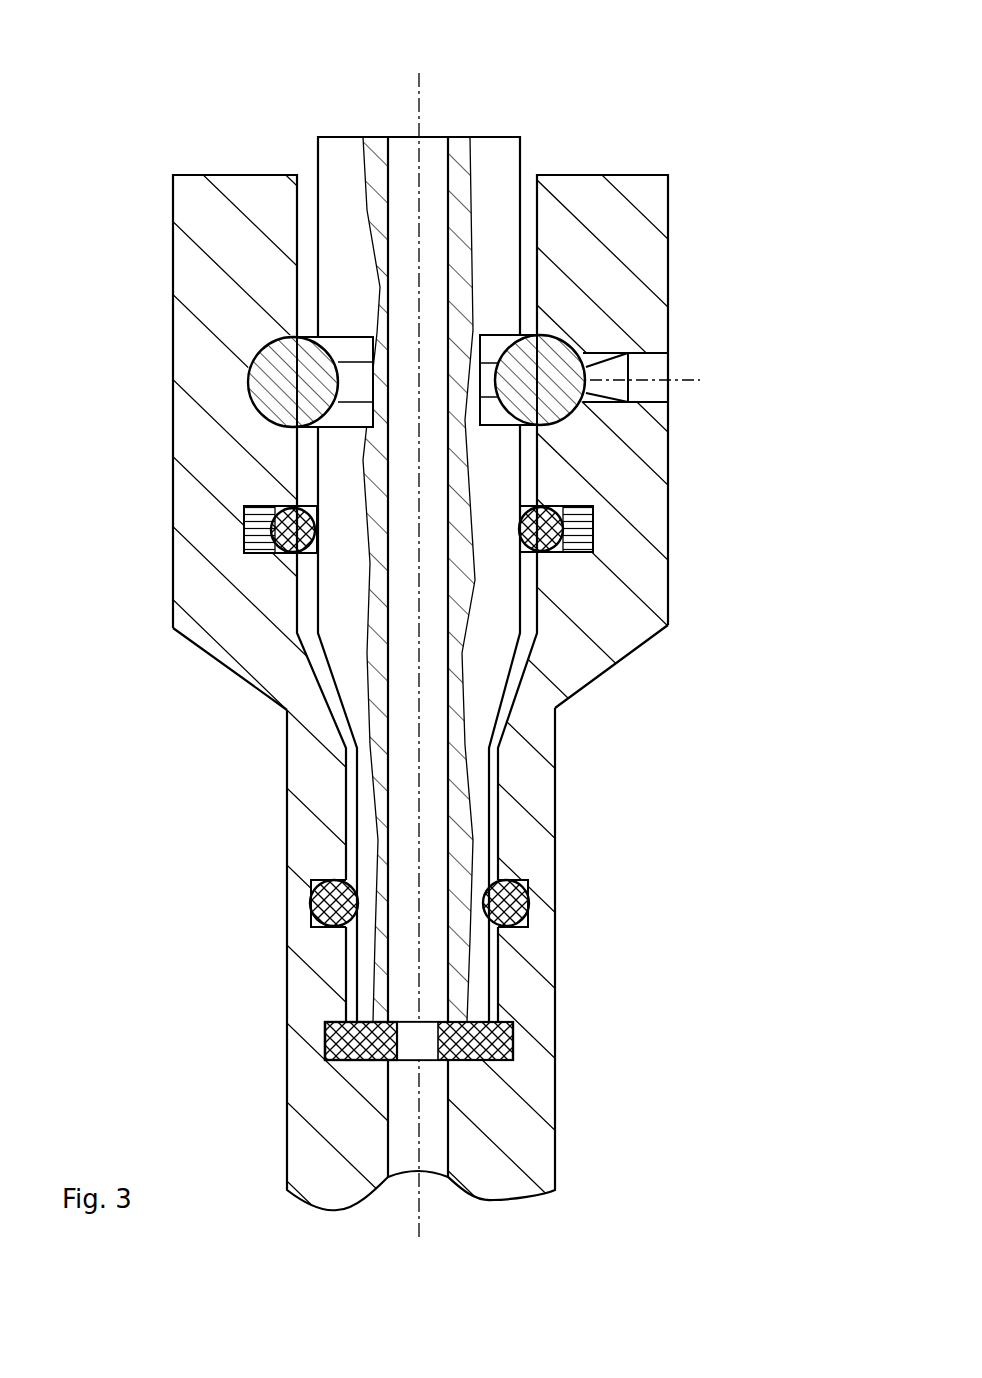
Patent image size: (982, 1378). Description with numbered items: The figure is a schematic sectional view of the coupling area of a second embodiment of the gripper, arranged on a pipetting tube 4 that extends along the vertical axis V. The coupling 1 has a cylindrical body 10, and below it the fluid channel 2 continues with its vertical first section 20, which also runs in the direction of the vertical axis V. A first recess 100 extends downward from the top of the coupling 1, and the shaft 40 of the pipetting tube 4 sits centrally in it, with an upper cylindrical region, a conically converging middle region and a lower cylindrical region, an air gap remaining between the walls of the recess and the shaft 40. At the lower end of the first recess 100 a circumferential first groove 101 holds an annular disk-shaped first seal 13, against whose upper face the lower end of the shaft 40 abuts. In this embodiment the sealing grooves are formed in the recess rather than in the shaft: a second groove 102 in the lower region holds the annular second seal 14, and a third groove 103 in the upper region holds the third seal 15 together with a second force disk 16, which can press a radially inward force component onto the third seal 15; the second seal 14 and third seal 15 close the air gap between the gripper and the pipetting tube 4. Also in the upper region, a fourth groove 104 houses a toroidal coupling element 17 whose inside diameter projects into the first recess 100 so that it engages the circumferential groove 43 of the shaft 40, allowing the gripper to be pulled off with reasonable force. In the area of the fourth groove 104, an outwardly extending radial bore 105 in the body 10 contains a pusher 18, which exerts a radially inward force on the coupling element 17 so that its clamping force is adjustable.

The coupling 1 is at (716, 192).
The fluid channel 2 is at (738, 871).
The pipetting tube 4 is at (337, 88).
The body 10 is at (193, 430).
The first seal 13 is at (515, 1025).
The second seal 14 is at (528, 907).
The third seal 15 is at (548, 507).
The second force disk 16 is at (593, 548).
The coupling element 17 is at (574, 333).
The pusher 18 is at (647, 367).
The first section 20 is at (312, 1153).
The shaft 40 is at (332, 147).
The groove 43 is at (493, 337).
The first recess 100 is at (310, 225).
The first groove 101 is at (325, 1023).
The second groove 102 is at (313, 903).
The third groove 103 is at (243, 537).
The fourth groove 104 is at (248, 383).
The radial bore 105 is at (603, 418).
The vertical axis V is at (422, 110).